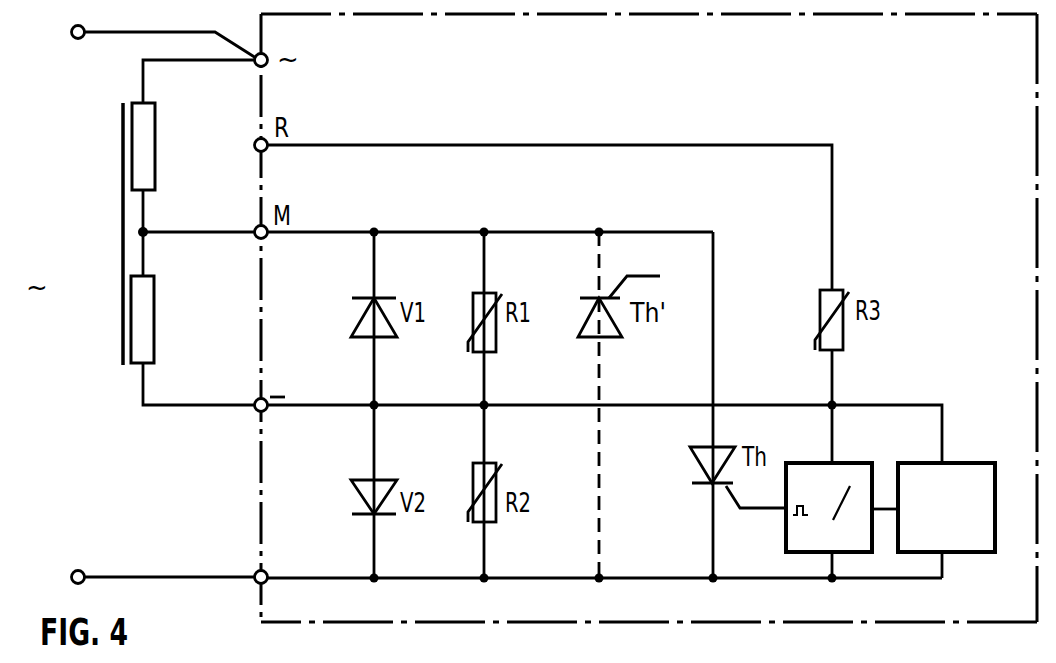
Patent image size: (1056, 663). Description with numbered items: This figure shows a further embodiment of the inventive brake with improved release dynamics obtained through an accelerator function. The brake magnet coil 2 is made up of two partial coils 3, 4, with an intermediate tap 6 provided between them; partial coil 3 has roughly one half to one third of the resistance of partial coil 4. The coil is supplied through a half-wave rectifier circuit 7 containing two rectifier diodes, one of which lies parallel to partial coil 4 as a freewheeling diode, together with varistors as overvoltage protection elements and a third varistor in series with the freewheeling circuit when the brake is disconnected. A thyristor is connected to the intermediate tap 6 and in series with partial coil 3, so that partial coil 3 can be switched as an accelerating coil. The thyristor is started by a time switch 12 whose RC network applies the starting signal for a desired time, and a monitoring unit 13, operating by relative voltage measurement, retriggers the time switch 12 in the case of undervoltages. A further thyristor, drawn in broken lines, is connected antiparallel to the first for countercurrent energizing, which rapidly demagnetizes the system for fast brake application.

The brake magnet coil 2 is at (129, 380).
The partial coil 3 is at (148, 135).
The partial coil 4 is at (150, 308).
The intermediate tap 6 is at (143, 232).
The half-wave rectifier circuit 7 is at (290, 530).
The time switch 12 is at (845, 480).
The monitoring unit 13 is at (965, 475).